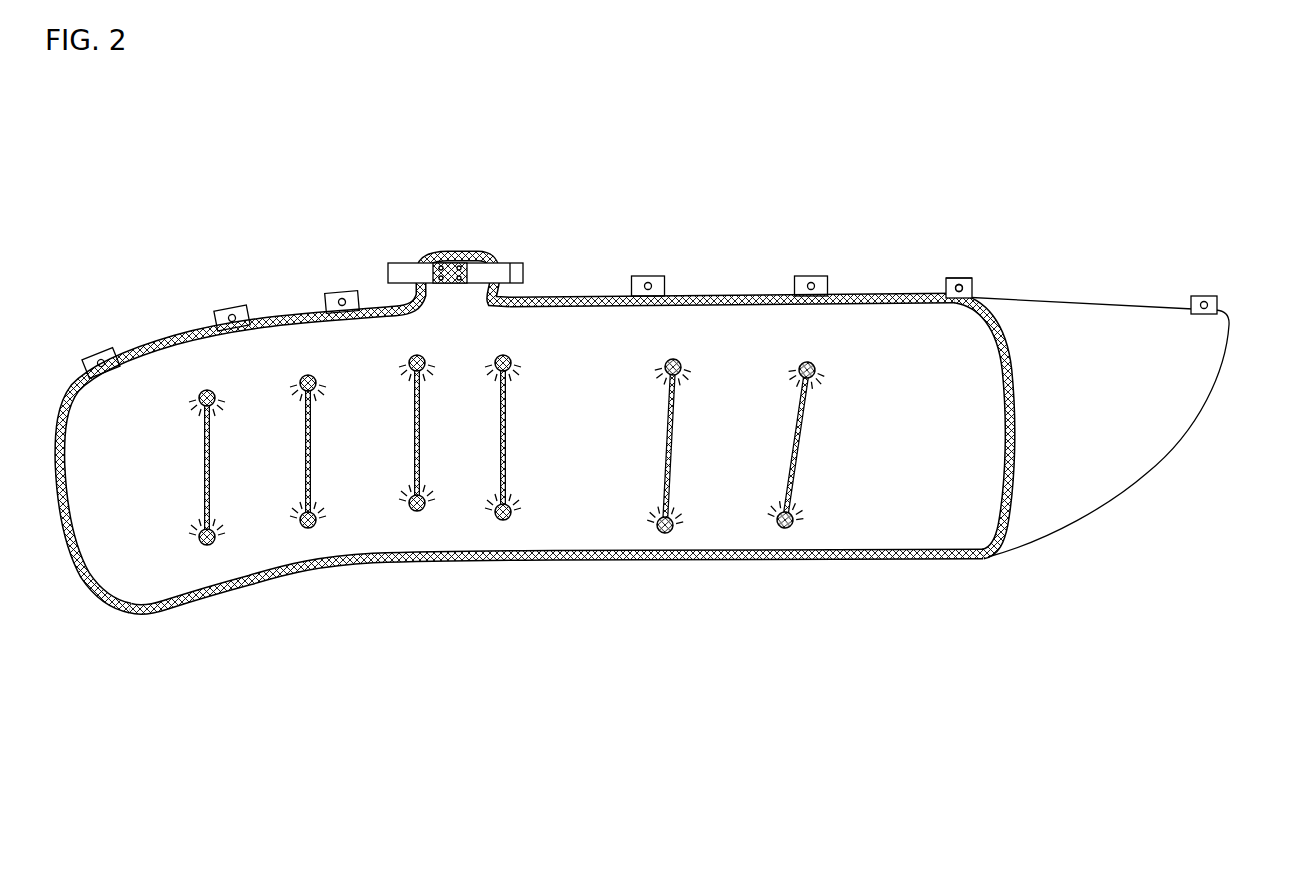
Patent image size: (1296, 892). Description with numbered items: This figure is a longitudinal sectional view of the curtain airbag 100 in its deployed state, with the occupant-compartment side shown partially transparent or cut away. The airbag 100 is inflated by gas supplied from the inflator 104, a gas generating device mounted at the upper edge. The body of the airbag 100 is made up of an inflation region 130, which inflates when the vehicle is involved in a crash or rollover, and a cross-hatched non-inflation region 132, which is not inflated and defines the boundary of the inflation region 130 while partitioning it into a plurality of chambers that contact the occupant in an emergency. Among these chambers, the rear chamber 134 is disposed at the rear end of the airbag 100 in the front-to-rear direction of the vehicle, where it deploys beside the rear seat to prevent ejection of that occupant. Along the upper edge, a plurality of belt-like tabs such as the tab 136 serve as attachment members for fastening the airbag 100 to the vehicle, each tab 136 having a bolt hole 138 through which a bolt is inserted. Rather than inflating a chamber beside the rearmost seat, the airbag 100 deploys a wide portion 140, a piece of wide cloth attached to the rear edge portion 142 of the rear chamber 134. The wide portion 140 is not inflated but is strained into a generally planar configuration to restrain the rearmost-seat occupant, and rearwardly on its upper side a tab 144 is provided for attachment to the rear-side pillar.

The airbag 100 is at (268, 252).
The inflator 104 is at (400, 268).
The inflation region 130 is at (717, 333).
The non-inflation region 132 is at (880, 296).
The rear chamber 134 is at (910, 508).
The tab 136 is at (964, 286).
The bolt hole 138 is at (956, 282).
The wide portion 140 is at (1107, 468).
The rear edge portion 142 is at (1018, 390).
The tab 144 is at (1215, 297).